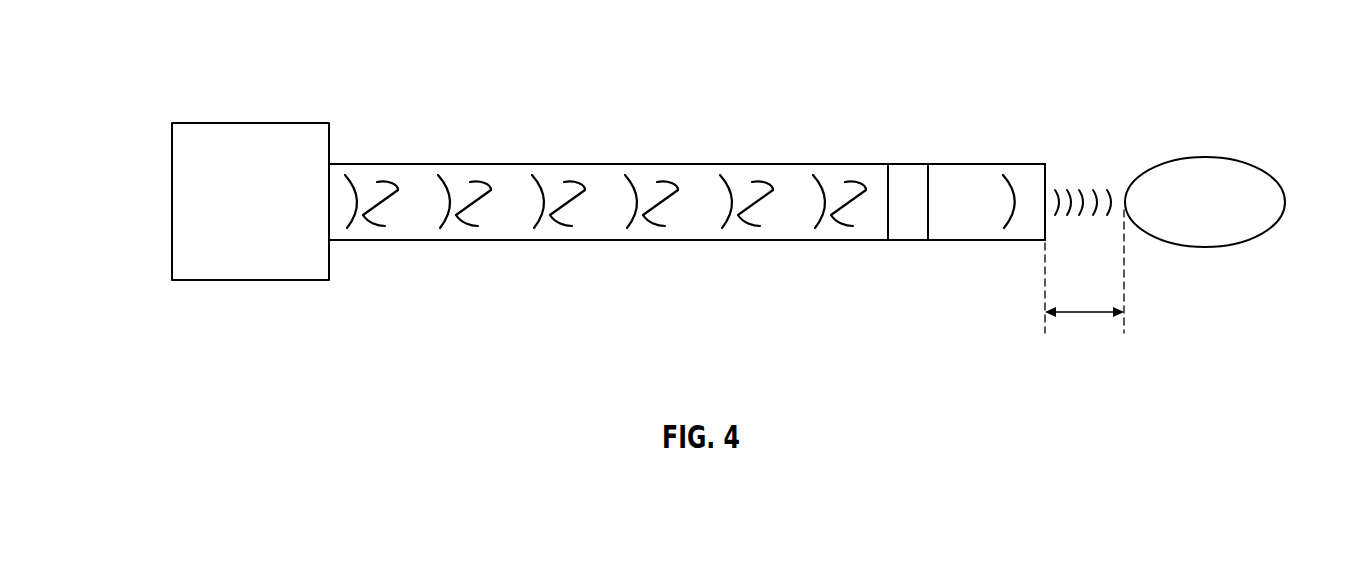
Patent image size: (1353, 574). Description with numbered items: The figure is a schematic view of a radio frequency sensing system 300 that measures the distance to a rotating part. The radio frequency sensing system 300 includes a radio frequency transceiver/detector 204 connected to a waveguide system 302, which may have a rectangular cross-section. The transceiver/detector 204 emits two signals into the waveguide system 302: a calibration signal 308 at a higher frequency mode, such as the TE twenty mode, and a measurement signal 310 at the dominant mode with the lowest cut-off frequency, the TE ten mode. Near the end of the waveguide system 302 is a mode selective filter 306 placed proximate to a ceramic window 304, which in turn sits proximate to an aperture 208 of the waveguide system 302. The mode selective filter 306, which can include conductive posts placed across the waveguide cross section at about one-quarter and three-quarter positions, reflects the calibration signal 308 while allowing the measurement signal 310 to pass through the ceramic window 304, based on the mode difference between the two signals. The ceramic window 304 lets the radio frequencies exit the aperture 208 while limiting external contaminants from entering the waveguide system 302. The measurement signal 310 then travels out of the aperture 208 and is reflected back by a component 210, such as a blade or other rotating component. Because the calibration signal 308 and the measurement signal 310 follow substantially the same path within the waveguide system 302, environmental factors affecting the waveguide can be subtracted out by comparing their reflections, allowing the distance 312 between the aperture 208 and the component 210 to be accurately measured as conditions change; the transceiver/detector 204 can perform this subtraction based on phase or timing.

The radio frequency sensing system 300 is at (170, 64).
The radio frequency transceiver/detector 204 is at (172, 200).
The waveguide system 302 is at (460, 163).
The calibration signal 308 is at (376, 225).
The measurement signal 310 is at (722, 176).
The mode selective filter 306 is at (908, 242).
The ceramic window 304 is at (977, 164).
The aperture 208 is at (1047, 178).
The rotating component 210 is at (1248, 166).
The distance 312 is at (1078, 313).